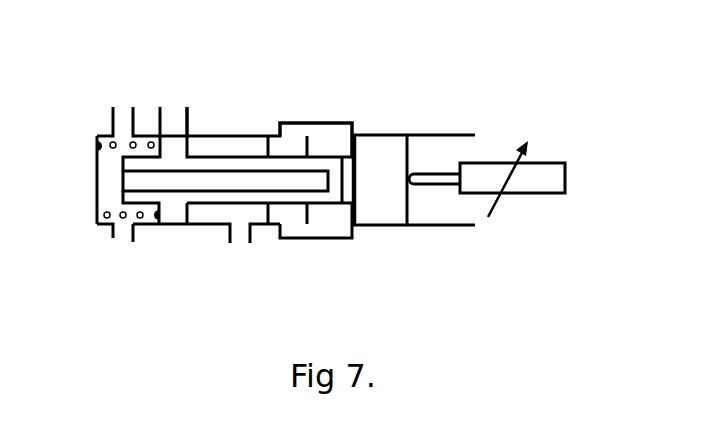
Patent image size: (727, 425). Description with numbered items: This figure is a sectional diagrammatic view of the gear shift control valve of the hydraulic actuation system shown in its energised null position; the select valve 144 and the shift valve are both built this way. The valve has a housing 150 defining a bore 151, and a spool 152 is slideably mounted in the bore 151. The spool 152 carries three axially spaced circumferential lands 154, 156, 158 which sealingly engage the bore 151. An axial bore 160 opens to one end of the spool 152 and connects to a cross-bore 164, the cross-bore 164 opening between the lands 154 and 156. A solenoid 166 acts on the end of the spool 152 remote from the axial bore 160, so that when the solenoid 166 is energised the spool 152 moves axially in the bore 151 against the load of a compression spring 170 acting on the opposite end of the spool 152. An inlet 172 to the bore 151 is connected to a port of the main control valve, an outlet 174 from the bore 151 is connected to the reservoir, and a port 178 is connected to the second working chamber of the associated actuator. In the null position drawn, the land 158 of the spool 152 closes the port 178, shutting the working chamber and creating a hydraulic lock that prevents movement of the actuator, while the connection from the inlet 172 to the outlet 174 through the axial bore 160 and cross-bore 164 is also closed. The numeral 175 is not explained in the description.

The select valve 144 is at (450, 134).
The housing 150 is at (478, 134).
The bore 151 is at (112, 199).
The spool 152 is at (443, 212).
The land 154 is at (383, 178).
The land 156 is at (293, 130).
The land 158 is at (182, 228).
The axial bore 160 is at (130, 182).
The cross-bore 164 is at (332, 170).
The solenoid 166 is at (555, 182).
The compression spring 170 is at (130, 135).
The inlet 172 is at (242, 230).
The outlet 174 is at (128, 117).
The lower contact pin 175 is at (110, 243).
The port 178 is at (173, 117).